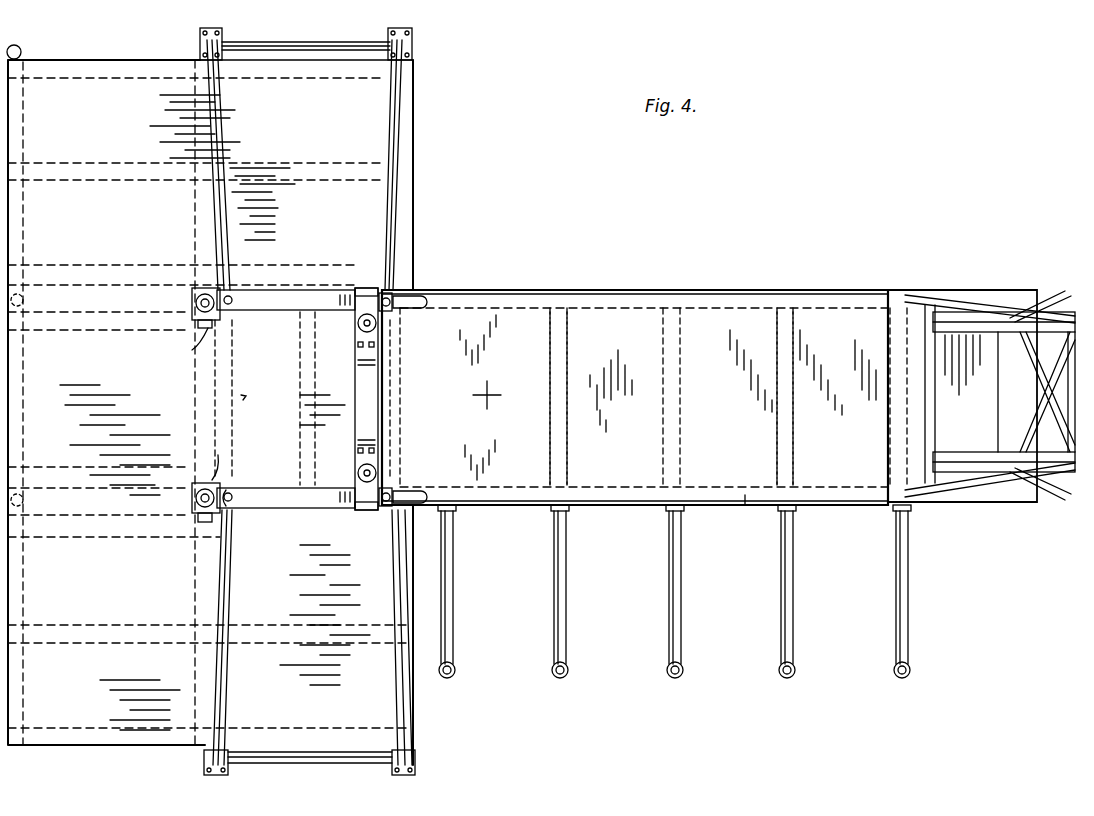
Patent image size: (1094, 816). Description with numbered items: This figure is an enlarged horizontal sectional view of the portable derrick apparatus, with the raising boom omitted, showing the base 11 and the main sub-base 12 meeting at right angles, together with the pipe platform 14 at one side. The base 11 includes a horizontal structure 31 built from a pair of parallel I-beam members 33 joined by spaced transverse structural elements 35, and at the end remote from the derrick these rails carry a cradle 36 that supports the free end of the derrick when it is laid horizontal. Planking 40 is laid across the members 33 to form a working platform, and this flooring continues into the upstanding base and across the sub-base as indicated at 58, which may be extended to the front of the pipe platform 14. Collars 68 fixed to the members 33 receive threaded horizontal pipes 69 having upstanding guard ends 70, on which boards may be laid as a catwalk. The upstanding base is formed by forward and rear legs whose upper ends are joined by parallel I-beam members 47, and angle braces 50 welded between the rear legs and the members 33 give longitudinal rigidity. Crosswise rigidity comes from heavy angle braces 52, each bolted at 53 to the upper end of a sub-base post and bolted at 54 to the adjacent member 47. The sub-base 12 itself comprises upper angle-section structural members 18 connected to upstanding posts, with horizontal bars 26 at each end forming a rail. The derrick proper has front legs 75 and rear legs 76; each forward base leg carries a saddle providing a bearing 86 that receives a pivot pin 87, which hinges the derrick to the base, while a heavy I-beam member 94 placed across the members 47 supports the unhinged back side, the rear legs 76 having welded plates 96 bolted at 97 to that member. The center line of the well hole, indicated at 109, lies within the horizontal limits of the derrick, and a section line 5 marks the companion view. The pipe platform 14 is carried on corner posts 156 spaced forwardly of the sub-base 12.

The section line 5 is at (498, 395).
The base 11 is at (616, 288).
The main sub-base 12 is at (420, 225).
The pipe platform 14 is at (110, 56).
The structural members 18 is at (193, 124).
The horizontal bars 26 is at (278, 40).
The horizontal structure 31 is at (639, 511).
The horizontal parallel structural members 33 is at (735, 300).
The transverse structural elements 35 is at (318, 408).
The cradle 36 is at (1046, 406).
The planking 40 is at (835, 300).
The horizontal structural members 47 is at (304, 296).
The angle braces 50 is at (428, 298).
The angle braces 52 is at (226, 132).
The bolt connection 53 is at (206, 766).
The bolt connection 54 is at (238, 496).
The flooring extension 58 is at (375, 205).
The collars 68 is at (548, 510).
The horizontal pipes 69 is at (567, 602).
The upstanding guard ends 70 is at (568, 665).
The front legs 75 is at (190, 304).
The rear legs 76 is at (364, 288).
The bearing 86 is at (184, 284).
The pivot pin 87 is at (193, 350).
The structural member 94 is at (380, 378).
The plates 96 is at (357, 330).
The bolts 97 is at (375, 345).
The well hole center line 109 is at (243, 400).
The corner posts 156 is at (21, 51).